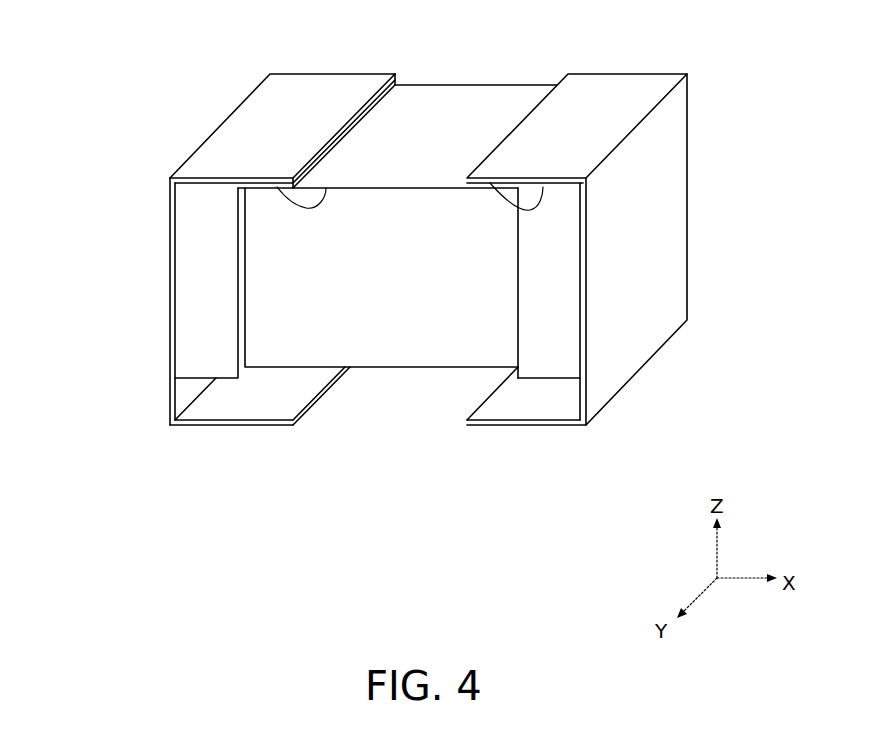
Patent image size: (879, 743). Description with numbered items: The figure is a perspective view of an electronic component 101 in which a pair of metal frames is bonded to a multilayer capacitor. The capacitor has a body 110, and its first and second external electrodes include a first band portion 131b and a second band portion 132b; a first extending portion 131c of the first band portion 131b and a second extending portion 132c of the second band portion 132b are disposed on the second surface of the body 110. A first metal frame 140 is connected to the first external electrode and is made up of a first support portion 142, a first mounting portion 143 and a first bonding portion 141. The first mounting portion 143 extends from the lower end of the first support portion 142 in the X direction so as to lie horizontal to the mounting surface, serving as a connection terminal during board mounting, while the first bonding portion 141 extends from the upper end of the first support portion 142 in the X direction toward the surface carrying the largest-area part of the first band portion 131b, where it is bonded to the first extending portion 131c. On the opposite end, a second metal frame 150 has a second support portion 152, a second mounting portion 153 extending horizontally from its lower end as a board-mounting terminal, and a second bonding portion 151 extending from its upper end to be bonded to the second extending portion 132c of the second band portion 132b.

The electronic component 101 is at (151, 33).
The body 110 is at (472, 90).
The first band portion 131b is at (262, 337).
The first extending portion 131c is at (326, 188).
The second band portion 132b is at (538, 357).
The second extending portion 132c is at (543, 187).
The first metal frame 140 is at (209, 248).
The first bonding portion 141 is at (250, 136).
The first support portion 142 is at (183, 253).
The first mounting portion 143 is at (200, 426).
The second metal frame 150 is at (645, 248).
The second bonding portion 151 is at (583, 133).
The second support portion 152 is at (633, 232).
The second mounting portion 153 is at (568, 427).